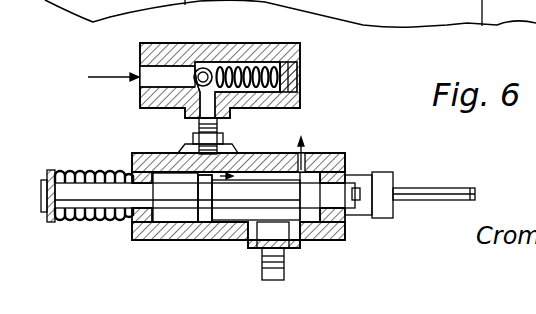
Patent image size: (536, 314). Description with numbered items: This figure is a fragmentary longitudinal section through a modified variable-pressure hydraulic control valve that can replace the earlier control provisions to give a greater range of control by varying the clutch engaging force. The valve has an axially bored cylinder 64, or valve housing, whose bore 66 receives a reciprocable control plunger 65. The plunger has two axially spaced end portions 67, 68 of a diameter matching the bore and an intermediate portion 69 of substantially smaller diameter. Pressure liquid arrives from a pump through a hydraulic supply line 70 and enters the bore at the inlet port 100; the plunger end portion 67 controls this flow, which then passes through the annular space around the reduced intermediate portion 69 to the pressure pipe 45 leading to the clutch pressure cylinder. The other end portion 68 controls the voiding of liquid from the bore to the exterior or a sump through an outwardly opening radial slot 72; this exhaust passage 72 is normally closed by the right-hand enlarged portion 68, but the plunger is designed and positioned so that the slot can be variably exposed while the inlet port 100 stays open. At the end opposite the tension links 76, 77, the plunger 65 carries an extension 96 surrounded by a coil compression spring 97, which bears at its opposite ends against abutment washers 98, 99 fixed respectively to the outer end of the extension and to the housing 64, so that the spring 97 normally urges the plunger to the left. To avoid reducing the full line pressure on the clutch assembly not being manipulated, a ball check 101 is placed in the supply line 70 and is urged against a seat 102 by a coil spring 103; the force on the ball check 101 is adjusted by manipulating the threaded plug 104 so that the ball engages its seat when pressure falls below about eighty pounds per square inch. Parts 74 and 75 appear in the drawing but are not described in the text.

The pipe 45 is at (260, 272).
The cylinder 64 is at (143, 152).
The control plunger 65 is at (142, 242).
The bore 66 is at (226, 225).
The plunger end portion 67 is at (172, 225).
The plunger end portion 68 is at (322, 242).
The intermediate portion 69 is at (204, 225).
The hydraulic supply line 70 is at (222, 130).
The radial slot 72 is at (307, 153).
The coupling nut 74 is at (390, 174).
The coupling 75 is at (362, 178).
The tension link 76 is at (424, 202).
The tension link 77 is at (446, 186).
The extension 96 is at (78, 200).
The coil compression spring 97 is at (95, 172).
The abutment washer 98 is at (50, 170).
The abutment washer 99 is at (132, 220).
The inlet port 100 is at (180, 156).
The ball check 101 is at (140, 58).
The seat 102 is at (178, 45).
The coil spring 103 is at (228, 70).
The threaded plug 104 is at (298, 69).